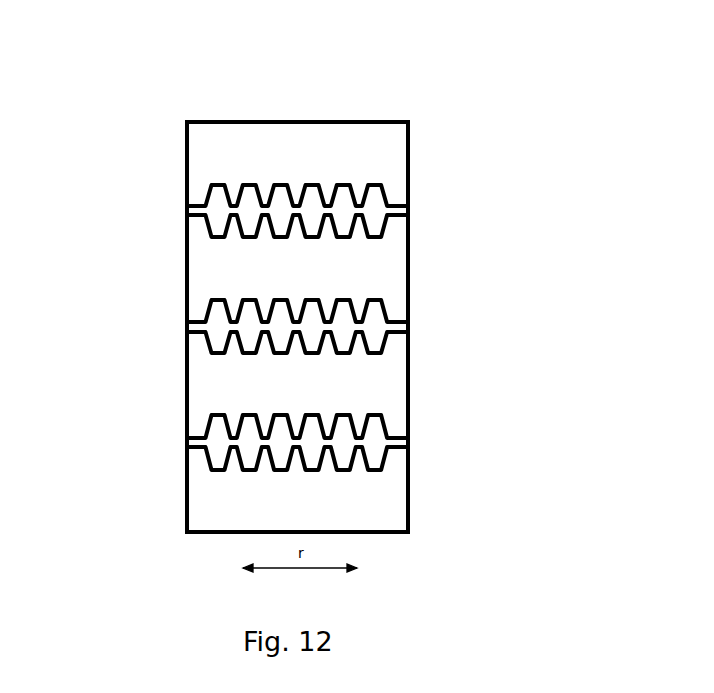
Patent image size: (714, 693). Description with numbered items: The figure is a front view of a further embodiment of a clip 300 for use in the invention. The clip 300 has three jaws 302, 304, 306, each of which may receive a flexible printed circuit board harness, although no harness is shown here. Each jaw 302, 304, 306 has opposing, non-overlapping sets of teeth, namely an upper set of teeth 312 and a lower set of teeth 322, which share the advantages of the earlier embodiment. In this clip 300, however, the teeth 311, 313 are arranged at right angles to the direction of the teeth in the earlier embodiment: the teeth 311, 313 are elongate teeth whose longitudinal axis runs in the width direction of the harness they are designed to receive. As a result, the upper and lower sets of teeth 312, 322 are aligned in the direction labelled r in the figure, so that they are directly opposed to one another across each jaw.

The clip 300 is at (165, 109).
The jaw 302 is at (245, 207).
The jaw 304 is at (324, 322).
The jaw 306 is at (220, 437).
The teeth 311 is at (383, 308).
The upper set of teeth 312 is at (361, 187).
The teeth 313 is at (383, 345).
The lower set of teeth 322 is at (236, 229).